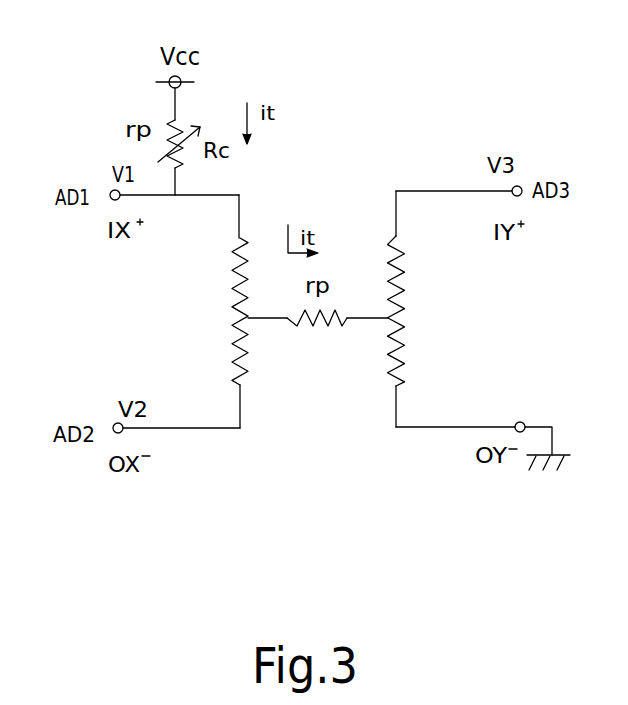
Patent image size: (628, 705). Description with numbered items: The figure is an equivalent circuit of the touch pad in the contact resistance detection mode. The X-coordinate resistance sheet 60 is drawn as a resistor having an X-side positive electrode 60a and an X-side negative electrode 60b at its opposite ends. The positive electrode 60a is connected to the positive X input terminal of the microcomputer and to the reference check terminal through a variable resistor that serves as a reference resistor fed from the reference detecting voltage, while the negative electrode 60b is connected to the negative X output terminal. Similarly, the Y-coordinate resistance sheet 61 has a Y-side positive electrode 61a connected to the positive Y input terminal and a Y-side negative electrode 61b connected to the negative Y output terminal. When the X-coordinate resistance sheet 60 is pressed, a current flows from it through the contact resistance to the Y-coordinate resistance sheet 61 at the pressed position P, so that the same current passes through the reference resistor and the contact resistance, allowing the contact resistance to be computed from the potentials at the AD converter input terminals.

The X-coordinate resistance sheet 60 is at (240, 358).
The X-side positive electrode 60a is at (240, 237).
The X-side negative electrode 60b is at (247, 388).
The Y-coordinate resistance sheet 61 is at (398, 266).
The Y-side positive electrode 61a is at (396, 237).
The Y-side negative electrode 61b is at (401, 384).
The pressed position P is at (238, 321).